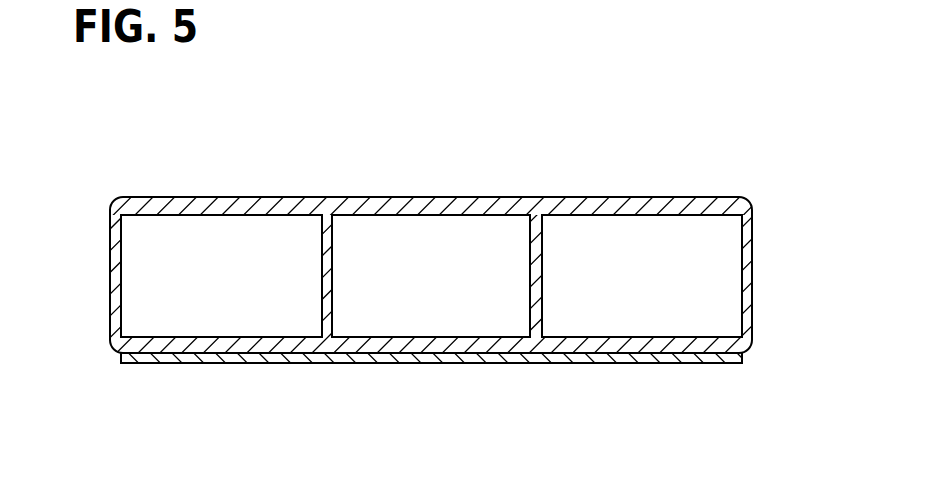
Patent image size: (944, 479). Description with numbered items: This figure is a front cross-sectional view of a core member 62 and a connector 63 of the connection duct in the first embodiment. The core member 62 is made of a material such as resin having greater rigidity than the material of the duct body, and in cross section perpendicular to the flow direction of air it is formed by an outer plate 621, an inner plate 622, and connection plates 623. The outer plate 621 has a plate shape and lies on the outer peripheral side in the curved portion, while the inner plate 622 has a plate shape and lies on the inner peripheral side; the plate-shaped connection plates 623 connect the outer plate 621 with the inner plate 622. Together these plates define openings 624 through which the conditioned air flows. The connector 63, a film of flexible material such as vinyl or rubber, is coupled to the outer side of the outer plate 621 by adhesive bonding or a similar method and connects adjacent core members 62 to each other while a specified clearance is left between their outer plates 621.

The core member 62 is at (660, 197).
The outer plate 621 is at (293, 345).
The inner plate 622 is at (389, 208).
The connection plate 623 is at (116, 248).
The opening 624 is at (218, 307).
The connector 63 is at (704, 357).